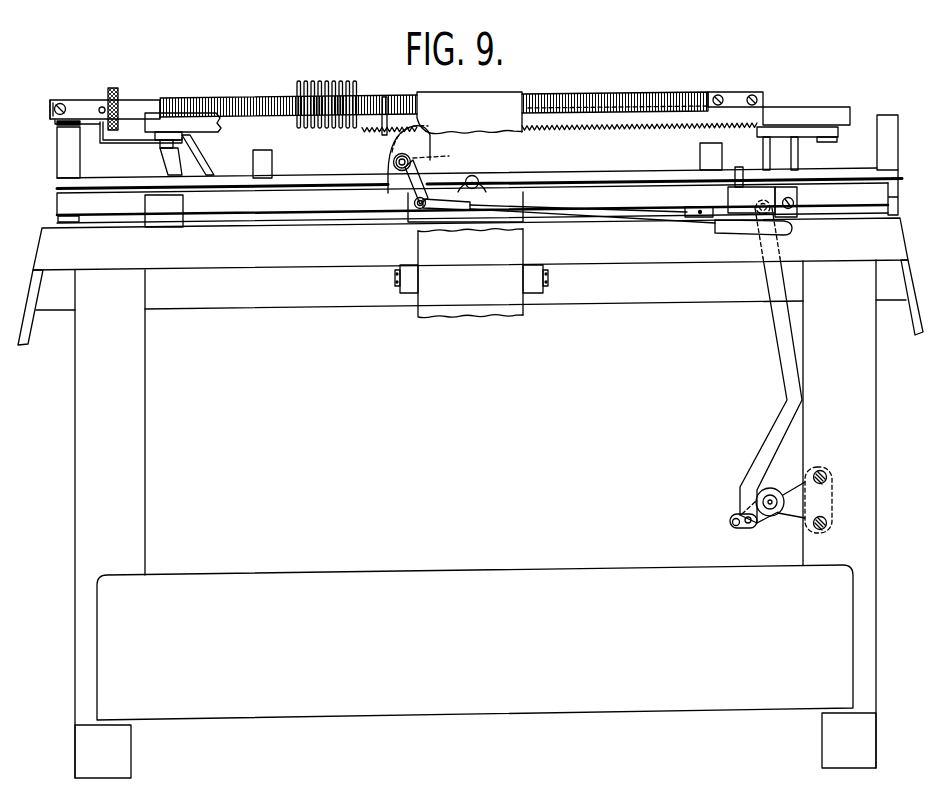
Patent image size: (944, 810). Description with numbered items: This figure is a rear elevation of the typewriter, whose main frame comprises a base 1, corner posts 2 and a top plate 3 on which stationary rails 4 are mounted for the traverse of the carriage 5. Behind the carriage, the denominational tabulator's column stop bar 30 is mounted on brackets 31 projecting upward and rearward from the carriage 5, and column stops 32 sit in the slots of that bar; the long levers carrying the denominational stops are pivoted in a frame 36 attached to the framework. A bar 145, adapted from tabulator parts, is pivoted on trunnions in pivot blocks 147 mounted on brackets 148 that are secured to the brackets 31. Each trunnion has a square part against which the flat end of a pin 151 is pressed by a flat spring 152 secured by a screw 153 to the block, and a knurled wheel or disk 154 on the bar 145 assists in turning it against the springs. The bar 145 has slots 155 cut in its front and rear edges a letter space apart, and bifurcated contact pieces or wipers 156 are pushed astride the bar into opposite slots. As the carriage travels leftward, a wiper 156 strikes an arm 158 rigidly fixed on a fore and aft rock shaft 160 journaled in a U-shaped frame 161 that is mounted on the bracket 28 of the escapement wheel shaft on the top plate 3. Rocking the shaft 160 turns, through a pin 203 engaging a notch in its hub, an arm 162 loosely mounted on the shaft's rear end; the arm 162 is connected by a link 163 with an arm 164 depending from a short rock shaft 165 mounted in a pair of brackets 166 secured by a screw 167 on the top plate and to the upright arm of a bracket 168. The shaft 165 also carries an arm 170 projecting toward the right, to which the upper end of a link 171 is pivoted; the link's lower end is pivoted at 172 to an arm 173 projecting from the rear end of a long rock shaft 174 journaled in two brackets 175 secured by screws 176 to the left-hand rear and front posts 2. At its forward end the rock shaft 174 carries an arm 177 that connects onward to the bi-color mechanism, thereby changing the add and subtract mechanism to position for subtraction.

The base 1 is at (507, 569).
The corner posts 2 is at (145, 355).
The top plate 3 is at (217, 268).
The stationary rails 4 is at (57, 209).
The carriage 5 is at (68, 149).
The bracket 28 is at (529, 197).
The column stop bar 30 is at (591, 129).
The brackets 31 is at (193, 146).
The column stops 32 is at (381, 136).
The frame 36 is at (530, 243).
The bar 145 is at (141, 107).
The pivot blocks 147 is at (51, 101).
The brackets 148 is at (115, 144).
The pin 151 is at (98, 125).
The flat spring 152 is at (75, 103).
The screw 153 is at (55, 110).
The knurled wheel or disk 154 is at (113, 88).
The slots 155 is at (249, 98).
The contact pieces or wipers 156 is at (303, 131).
The arm 158 is at (412, 141).
The rock shaft 160 is at (393, 162).
The U-shaped frame 161 is at (399, 189).
The arm 162 is at (417, 161).
The link 163 is at (487, 208).
The arm 164 is at (794, 230).
The short rock shaft 165 is at (794, 200).
The brackets 166 is at (751, 200).
The screw 167 is at (691, 218).
The bracket 168 is at (718, 212).
The arm 170 is at (768, 199).
The link 171 is at (777, 318).
The pivot 172 is at (748, 525).
The arm 173 is at (763, 515).
The long rock shaft 174 is at (770, 490).
The brackets 175 is at (805, 500).
The screws 176 is at (823, 471).
The arm 177 is at (734, 516).
The pin 203 is at (444, 151).